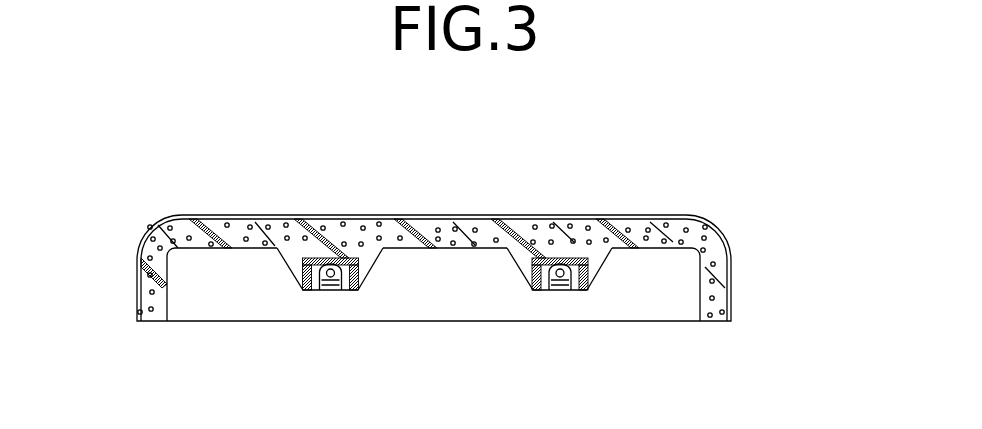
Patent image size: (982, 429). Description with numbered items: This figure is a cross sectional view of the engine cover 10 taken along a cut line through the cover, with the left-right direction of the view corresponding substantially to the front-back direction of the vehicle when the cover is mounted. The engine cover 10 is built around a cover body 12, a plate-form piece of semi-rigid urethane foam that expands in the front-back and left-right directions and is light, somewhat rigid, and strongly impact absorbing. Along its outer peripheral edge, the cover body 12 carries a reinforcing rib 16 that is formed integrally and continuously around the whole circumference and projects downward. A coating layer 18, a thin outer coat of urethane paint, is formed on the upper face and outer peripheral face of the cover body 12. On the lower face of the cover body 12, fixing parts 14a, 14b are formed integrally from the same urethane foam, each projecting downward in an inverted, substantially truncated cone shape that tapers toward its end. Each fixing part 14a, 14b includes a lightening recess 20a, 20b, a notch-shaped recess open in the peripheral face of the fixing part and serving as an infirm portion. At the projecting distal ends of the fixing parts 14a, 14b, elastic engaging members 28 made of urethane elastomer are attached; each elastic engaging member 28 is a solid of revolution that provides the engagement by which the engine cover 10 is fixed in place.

The engine cover 10 is at (716, 198).
The cover body 12 is at (215, 252).
The fixing part 14a is at (286, 270).
The fixing part 14b is at (517, 270).
The reinforcing rib 16 is at (708, 268).
The coating layer 18 is at (477, 218).
The lightening recess 20a is at (378, 266).
The lightening recess 20b is at (607, 266).
The elastic engaging member 28 is at (335, 295).